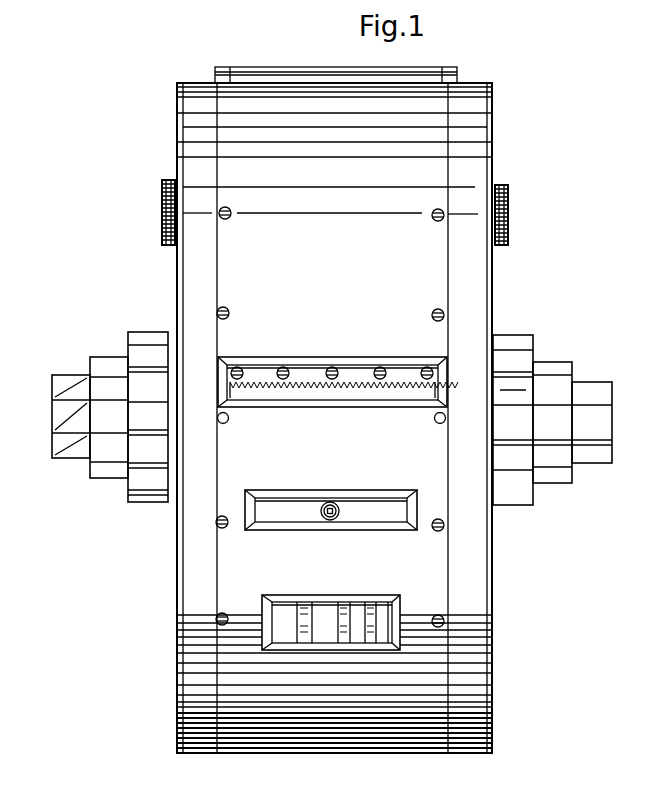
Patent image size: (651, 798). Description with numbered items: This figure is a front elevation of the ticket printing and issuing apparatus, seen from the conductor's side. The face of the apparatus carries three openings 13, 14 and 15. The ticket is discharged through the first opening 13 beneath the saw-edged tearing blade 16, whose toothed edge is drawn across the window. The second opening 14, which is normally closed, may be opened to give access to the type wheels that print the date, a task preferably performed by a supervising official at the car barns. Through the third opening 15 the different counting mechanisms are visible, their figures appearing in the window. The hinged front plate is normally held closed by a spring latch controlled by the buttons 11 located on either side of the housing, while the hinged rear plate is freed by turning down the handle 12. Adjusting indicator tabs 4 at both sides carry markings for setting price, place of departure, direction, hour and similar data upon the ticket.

The code tabs 4 is at (332, 405).
The buttons 11 is at (166, 180).
The handle 12 is at (109, 417).
The first opening 13 is at (304, 392).
The second opening 14 is at (352, 500).
The third opening 15 is at (342, 604).
The saw-edged tearing blade 16 is at (338, 381).